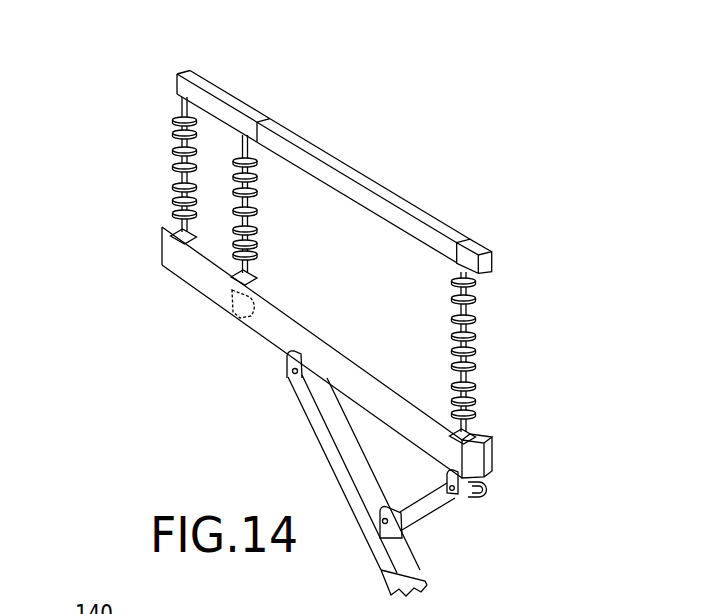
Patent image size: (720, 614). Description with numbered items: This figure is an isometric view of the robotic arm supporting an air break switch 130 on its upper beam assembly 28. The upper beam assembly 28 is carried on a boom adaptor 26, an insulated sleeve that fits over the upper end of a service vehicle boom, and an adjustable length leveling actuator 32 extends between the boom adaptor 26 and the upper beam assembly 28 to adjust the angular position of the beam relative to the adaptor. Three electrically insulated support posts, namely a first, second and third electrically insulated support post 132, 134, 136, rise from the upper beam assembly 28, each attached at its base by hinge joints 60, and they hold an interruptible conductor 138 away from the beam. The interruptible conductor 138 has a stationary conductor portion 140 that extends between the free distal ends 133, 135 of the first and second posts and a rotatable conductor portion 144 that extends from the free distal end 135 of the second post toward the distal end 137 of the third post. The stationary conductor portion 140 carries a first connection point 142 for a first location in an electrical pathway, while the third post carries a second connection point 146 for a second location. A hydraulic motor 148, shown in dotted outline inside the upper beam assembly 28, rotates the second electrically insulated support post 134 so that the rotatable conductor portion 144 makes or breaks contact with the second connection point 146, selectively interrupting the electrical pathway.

The air break switch 130 is at (523, 237).
The first electrically insulated support post 132 is at (128, 155).
The free distal end of first electrically insulated support post 133 is at (172, 165).
The second electrically insulated support post 134 is at (290, 204).
The free distal end of second electrically insulated support post 135 is at (254, 163).
The third electrically insulated support post 136 is at (508, 352).
The distal end of third electrically insulated support post 137 is at (466, 276).
The interruptible conductor 138 is at (175, 71).
The stationary conductor portion 140 is at (326, 139).
The first connection point 142 is at (158, 73).
The rotatable conductor portion 144 is at (343, 165).
The second connection point 146 is at (491, 262).
The motor 148 is at (256, 307).
The hinge joints 60 is at (186, 242).
The upper beam assembly 28 is at (327, 352).
The boom adaptor 26 is at (332, 467).
The leveling actuator 32 is at (413, 503).